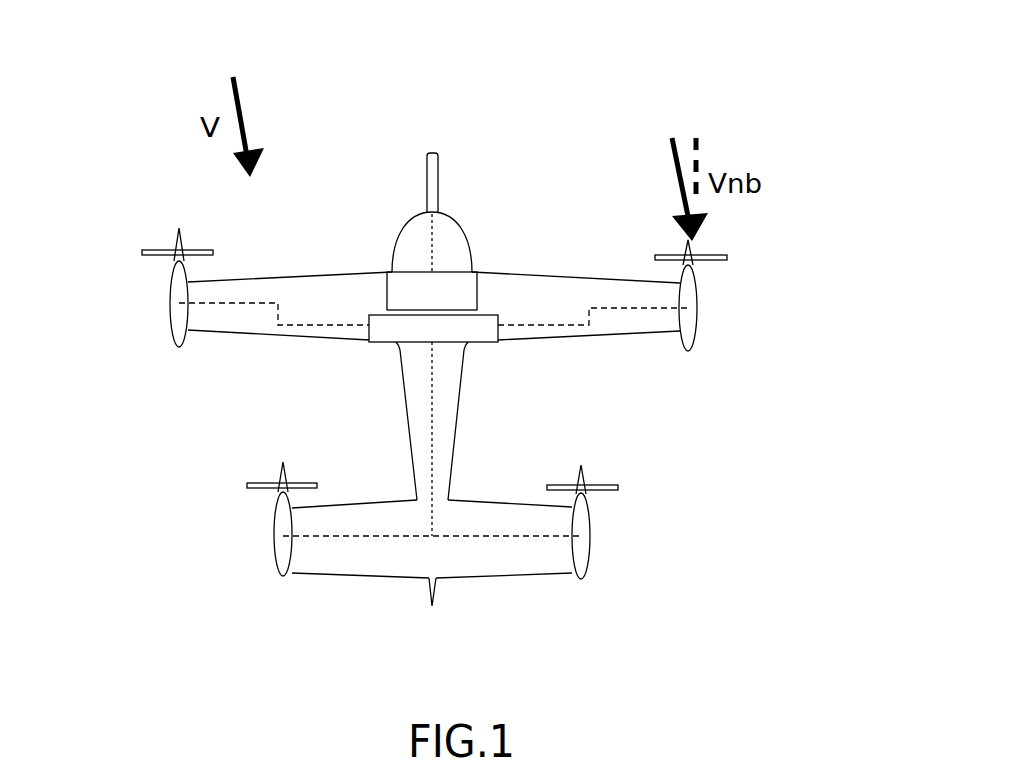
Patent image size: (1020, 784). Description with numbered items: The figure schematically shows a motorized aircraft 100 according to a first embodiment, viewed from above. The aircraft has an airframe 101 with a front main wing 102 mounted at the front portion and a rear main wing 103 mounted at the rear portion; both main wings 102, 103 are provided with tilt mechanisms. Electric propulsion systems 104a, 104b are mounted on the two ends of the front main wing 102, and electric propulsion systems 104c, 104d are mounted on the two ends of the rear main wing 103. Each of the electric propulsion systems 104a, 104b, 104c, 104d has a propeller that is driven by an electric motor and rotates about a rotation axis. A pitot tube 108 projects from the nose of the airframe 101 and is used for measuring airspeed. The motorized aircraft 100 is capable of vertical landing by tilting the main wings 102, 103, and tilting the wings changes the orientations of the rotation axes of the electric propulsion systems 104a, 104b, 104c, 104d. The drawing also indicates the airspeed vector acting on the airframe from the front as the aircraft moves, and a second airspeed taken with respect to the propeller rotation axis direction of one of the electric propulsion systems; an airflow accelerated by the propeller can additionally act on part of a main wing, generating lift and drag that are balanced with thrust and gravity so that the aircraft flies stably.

The motorized aircraft 100 is at (780, 89).
The airframe 101 is at (463, 397).
The front main wing 102 is at (538, 270).
The rear main wing 103 is at (493, 580).
The electric propulsion system 104a is at (170, 297).
The electric propulsion system 104b is at (697, 300).
The electric propulsion system 104c is at (275, 537).
The electric propulsion system 104d is at (590, 535).
The pitot tube 108 is at (427, 175).